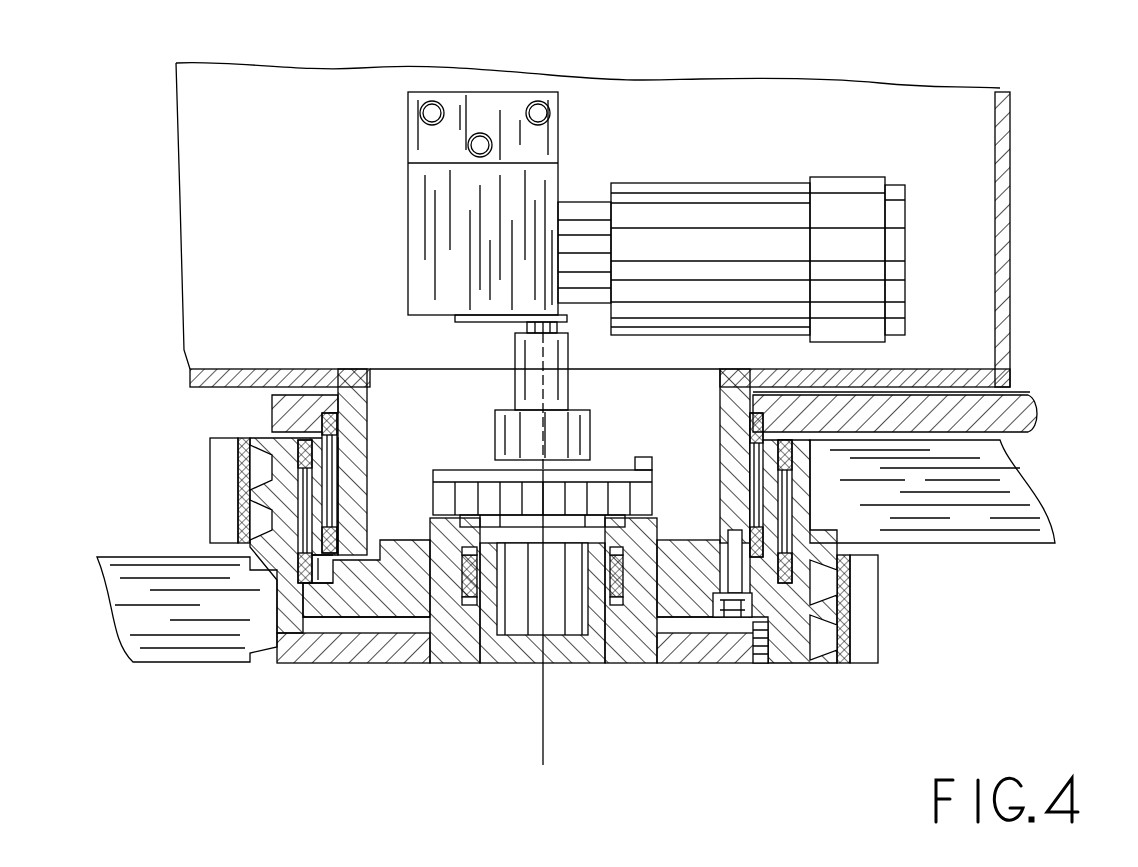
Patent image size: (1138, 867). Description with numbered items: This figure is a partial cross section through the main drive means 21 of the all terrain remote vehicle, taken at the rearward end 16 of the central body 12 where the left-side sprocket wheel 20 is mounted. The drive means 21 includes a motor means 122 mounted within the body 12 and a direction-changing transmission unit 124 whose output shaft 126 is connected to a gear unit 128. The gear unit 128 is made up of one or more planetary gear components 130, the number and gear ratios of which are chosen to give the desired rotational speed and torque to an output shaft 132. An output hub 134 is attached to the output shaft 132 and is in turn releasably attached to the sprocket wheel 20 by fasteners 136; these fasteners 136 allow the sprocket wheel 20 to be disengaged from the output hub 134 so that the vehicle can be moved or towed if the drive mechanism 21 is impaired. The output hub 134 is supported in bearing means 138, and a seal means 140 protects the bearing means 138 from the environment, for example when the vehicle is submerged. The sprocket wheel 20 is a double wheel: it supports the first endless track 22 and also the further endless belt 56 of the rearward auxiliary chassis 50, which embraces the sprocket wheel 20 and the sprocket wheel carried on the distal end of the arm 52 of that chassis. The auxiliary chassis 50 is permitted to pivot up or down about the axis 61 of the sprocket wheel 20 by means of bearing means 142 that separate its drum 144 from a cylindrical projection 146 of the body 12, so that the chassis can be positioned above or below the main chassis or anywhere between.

The central body 12 is at (1012, 105).
The rearward end 16 is at (1010, 210).
The sprocket wheel 20 is at (283, 663).
The main drive means 21 is at (382, 203).
The first endless track 22 is at (140, 552).
The auxiliary chassis 50 is at (1037, 417).
The arm 52 is at (1027, 397).
The endless belt 56 is at (210, 465).
The axis 61 is at (543, 718).
The motor means 122 is at (752, 183).
The direction-changing transmission unit 124 is at (562, 180).
The output shaft 126 is at (527, 330).
The gear unit 128 is at (468, 463).
The planetary gear component 130 is at (433, 492).
The output shaft 132 is at (575, 620).
The output hub 134 is at (648, 663).
The fastener 136 is at (768, 663).
The bearing means 138 is at (462, 580).
The seal means 140 is at (477, 597).
The bearing means 142 is at (720, 440).
The drum 144 is at (778, 505).
The cylindrical projection 146 is at (367, 372).